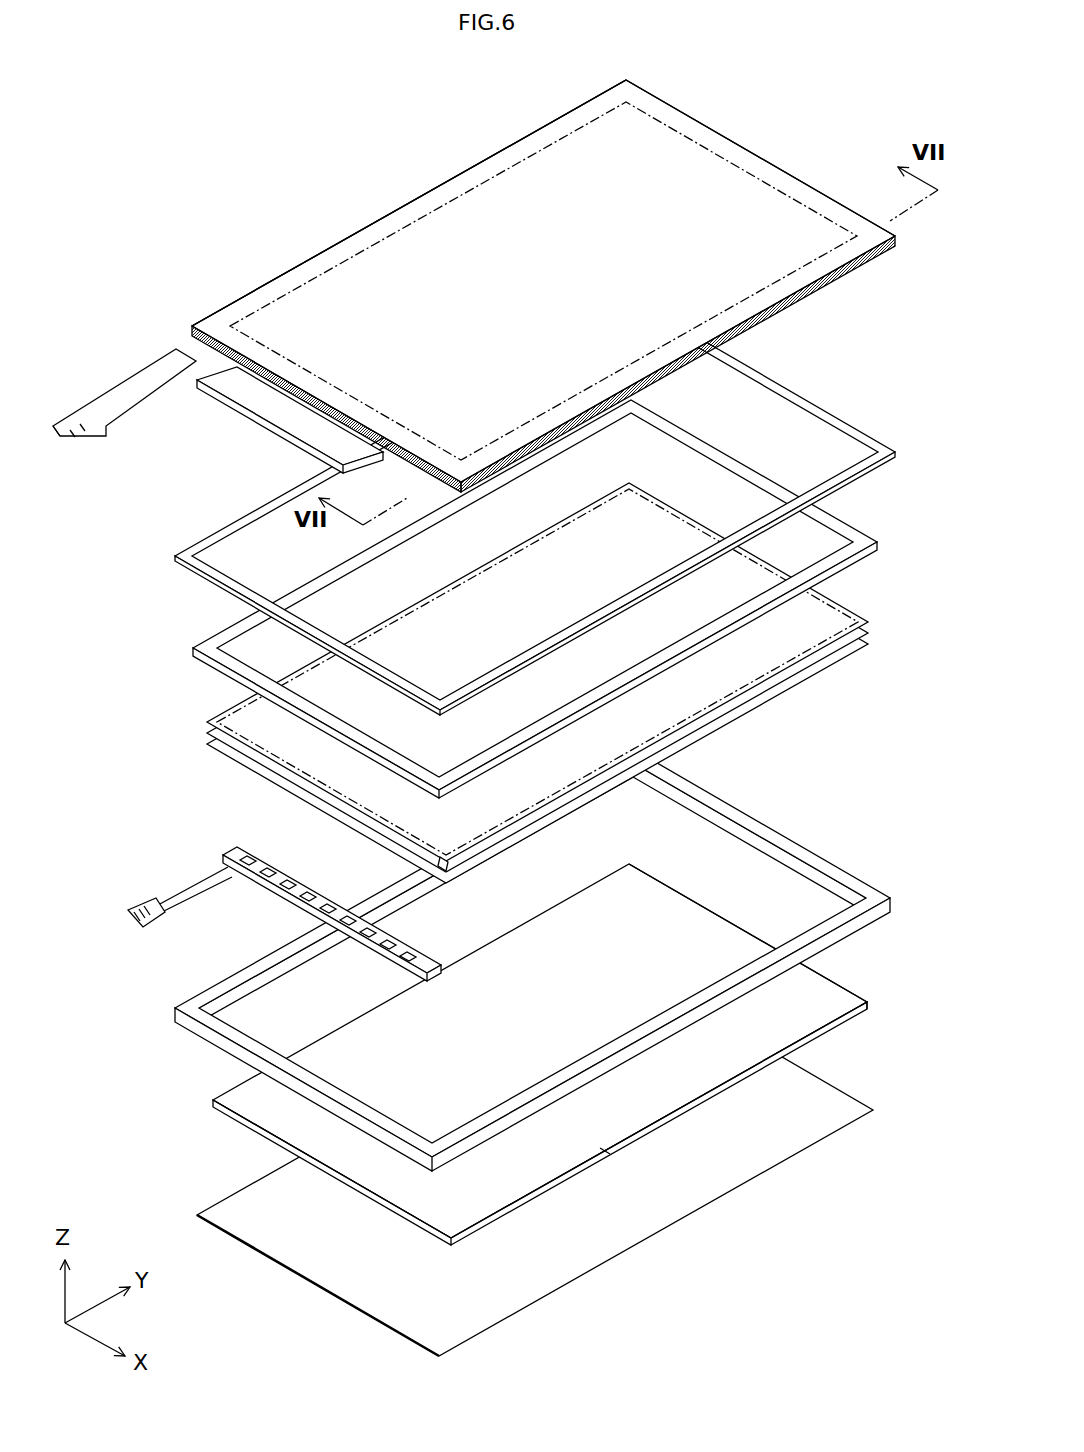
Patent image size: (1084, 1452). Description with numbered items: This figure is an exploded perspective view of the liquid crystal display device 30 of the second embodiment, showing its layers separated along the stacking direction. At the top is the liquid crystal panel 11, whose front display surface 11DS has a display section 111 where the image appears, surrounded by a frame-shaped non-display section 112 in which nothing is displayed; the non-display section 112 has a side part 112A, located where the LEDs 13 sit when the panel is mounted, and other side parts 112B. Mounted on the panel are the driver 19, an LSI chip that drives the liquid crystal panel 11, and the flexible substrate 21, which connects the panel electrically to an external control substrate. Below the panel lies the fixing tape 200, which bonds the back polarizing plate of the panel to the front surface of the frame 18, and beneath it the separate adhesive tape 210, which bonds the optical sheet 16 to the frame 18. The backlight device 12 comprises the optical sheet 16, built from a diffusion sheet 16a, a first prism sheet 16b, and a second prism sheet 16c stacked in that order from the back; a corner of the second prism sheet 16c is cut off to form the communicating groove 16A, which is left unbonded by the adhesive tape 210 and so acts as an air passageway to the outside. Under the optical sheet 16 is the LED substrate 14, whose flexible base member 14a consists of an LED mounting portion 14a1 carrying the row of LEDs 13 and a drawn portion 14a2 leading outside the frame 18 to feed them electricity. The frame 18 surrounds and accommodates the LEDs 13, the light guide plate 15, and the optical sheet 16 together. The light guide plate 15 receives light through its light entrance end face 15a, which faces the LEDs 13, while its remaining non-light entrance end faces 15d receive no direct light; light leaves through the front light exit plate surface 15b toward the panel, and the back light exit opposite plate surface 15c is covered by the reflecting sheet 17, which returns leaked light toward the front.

The liquid crystal display device 30 is at (503, 703).
The liquid crystal panel 11 is at (519, 271).
The display surface 11DS is at (462, 222).
The display section 111 is at (302, 305).
The non-display section 112 is at (519, 271).
The side part 112A is at (221, 365).
The other side parts 112B is at (556, 132).
The driver 19 is at (325, 417).
The flexible substrate 21 is at (150, 378).
The fixing tape 200 is at (884, 446).
The adhesive tape 210 is at (866, 542).
The backlight device 12 is at (517, 827).
The optical sheet 16 is at (580, 693).
The diffusion sheet 16a is at (765, 702).
The first prism sheet 16b is at (785, 679).
The second prism sheet 16c is at (800, 660).
The communicating groove 16A is at (450, 862).
The frame 18 is at (781, 848).
The LED substrate 14 is at (270, 916).
The base member 14a is at (270, 926).
The LED mounting portion 14a1 is at (255, 862).
The drawn portion 14a2 is at (147, 927).
The LEDs 13 is at (325, 911).
The light guide plate 15 is at (559, 1084).
The light entrance end face 15a is at (244, 1119).
The light exit plate surface 15b is at (652, 1086).
The light exit opposite plate surface 15c is at (822, 1038).
The non-light entrance end faces 15d is at (868, 1003).
The reflecting sheet 17 is at (540, 1268).